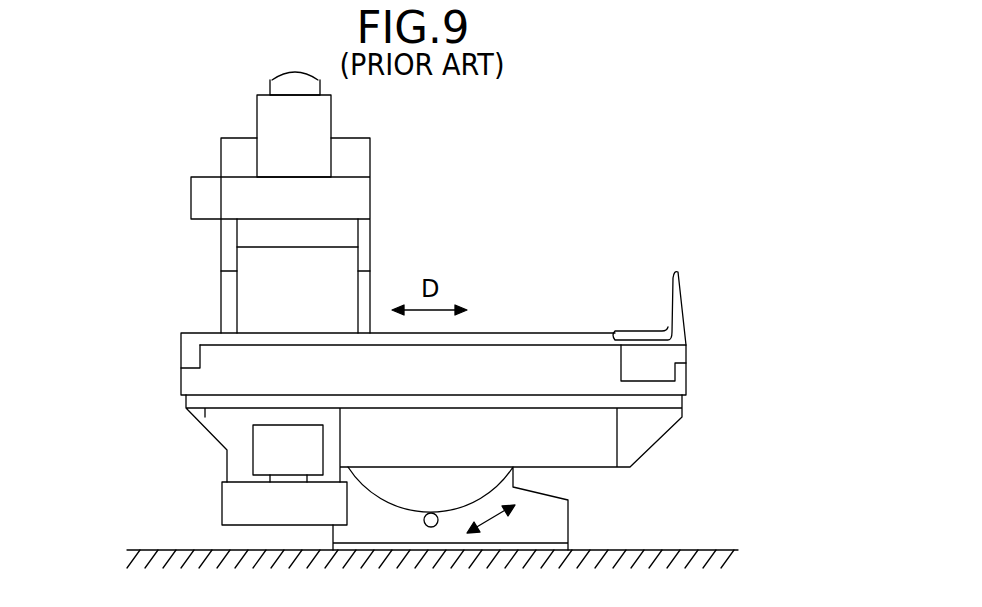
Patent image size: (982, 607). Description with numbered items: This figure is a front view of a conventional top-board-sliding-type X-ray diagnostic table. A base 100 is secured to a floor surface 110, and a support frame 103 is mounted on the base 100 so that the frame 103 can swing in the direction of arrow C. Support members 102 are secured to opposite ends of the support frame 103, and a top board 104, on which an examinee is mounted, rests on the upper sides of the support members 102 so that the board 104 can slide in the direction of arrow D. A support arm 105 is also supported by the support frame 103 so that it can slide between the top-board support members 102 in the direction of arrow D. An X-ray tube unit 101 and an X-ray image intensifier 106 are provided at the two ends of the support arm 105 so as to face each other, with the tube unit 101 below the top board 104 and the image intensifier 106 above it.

The base 100 is at (563, 522).
The X-ray tube unit 101 is at (222, 498).
The support members 102 is at (190, 357).
The support frame 103 is at (667, 432).
The top board 104 is at (512, 338).
The support arm 105 is at (208, 311).
The X-ray image intensifier 106 is at (325, 112).
The floor surface 110 is at (723, 560).